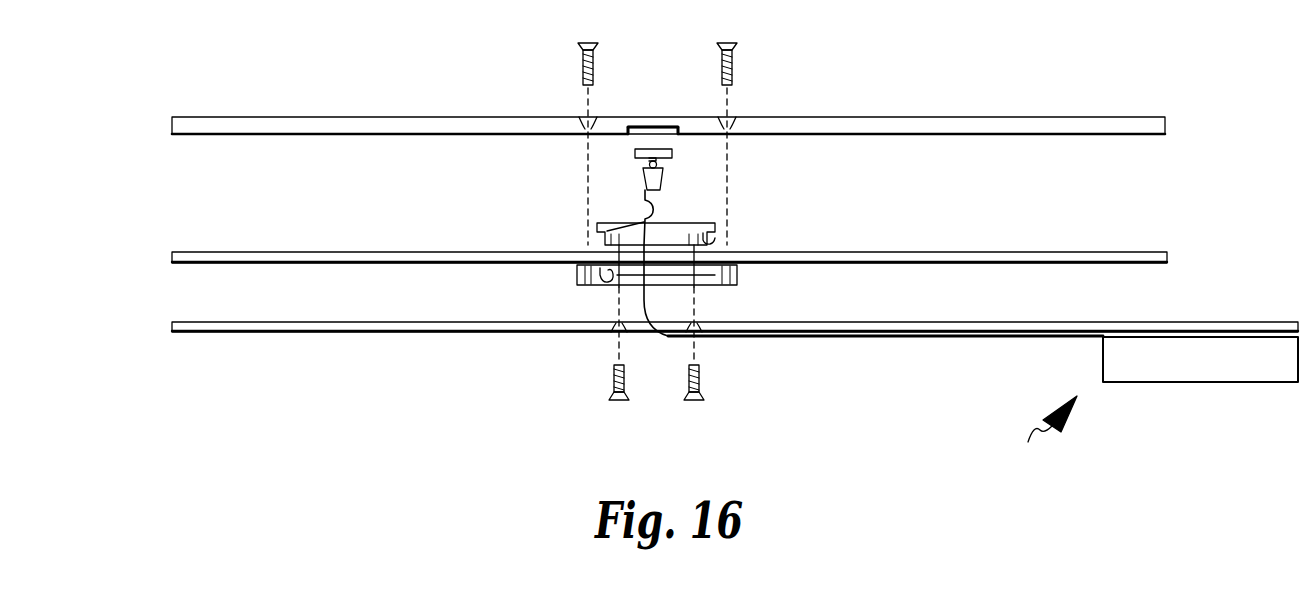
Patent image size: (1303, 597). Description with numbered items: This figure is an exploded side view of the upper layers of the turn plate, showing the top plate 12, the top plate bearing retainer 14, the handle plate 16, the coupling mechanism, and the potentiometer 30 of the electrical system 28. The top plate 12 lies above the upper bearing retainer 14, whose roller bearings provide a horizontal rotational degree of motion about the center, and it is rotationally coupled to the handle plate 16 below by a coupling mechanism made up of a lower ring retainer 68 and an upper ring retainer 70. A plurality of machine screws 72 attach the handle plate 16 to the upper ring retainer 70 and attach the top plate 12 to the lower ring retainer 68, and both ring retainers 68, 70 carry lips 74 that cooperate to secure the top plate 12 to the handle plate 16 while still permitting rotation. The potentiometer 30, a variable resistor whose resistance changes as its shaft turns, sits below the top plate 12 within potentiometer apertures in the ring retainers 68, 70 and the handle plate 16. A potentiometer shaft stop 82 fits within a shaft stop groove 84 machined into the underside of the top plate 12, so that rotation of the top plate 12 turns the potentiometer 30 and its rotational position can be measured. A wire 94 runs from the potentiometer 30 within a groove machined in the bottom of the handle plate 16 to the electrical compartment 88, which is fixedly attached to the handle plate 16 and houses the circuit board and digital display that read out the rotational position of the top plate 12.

The top plate 12 is at (990, 117).
The top plate bearing retainer 14 is at (1018, 252).
The handle plate 16 is at (1200, 322).
The electrical system 28 is at (1041, 436).
The potentiometer 30 is at (663, 176).
The lower ring retainer 68 is at (740, 280).
The upper ring retainer 70 is at (608, 222).
The machine screws 72 is at (582, 63).
The lips 74 is at (717, 240).
The potentiometer shaft stop 82 is at (634, 152).
The shaft stop groove 84 is at (676, 127).
The electrical compartment 88 is at (1213, 383).
The wire 94 is at (601, 234).